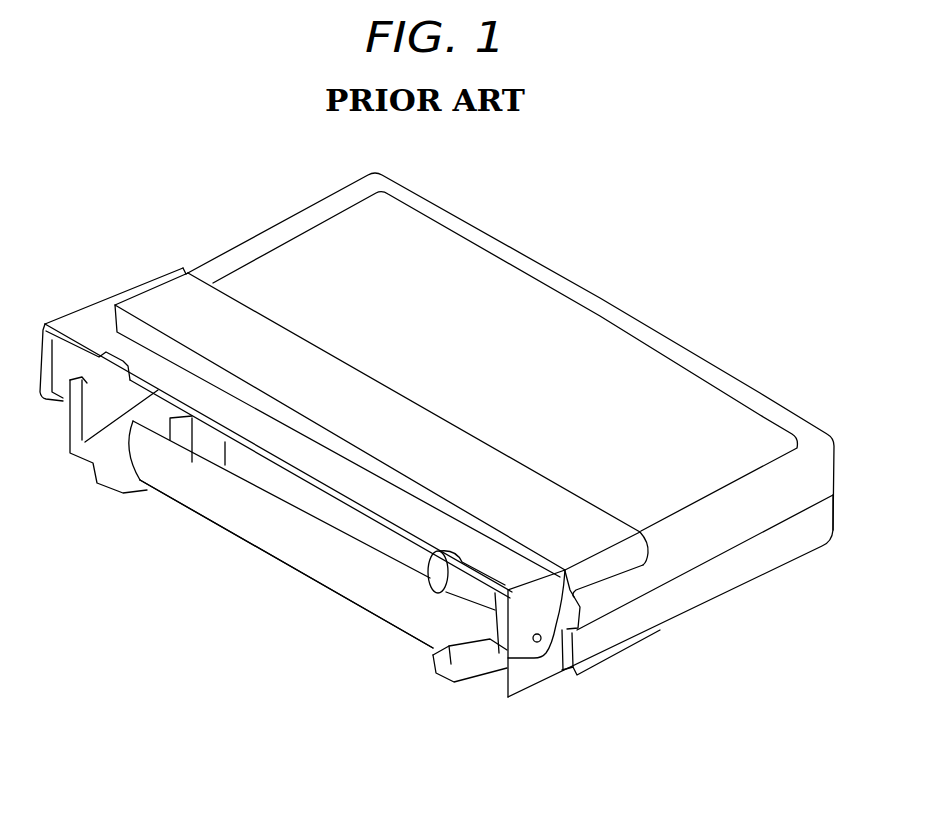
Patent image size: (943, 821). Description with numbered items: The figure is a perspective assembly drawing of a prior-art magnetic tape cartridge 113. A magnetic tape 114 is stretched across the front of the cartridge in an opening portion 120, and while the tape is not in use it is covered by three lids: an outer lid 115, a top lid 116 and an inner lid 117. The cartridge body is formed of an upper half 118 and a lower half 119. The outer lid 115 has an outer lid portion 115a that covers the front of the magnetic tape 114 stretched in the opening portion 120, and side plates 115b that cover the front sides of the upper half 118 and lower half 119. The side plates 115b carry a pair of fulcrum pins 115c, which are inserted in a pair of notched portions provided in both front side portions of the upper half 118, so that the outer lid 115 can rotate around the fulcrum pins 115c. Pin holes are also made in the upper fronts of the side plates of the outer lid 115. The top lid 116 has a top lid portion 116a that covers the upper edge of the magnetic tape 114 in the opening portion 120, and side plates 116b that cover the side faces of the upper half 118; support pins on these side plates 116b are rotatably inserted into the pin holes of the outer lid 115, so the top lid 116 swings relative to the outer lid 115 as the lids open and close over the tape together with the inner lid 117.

The magnetic tape cartridge 113 is at (652, 270).
The magnetic tape 114 is at (305, 565).
The outer lid 115 is at (81, 326).
The outer lid portion 115a is at (333, 468).
The side plates 115b is at (505, 652).
The fulcrum pins 115c is at (538, 643).
The top lid 116 is at (161, 295).
The top lid portion 116a is at (470, 458).
The side plates 116b is at (637, 563).
The inner lid 117 is at (398, 572).
The upper half 118 is at (784, 488).
The lower half 119 is at (798, 540).
The opening portion 120 is at (212, 537).